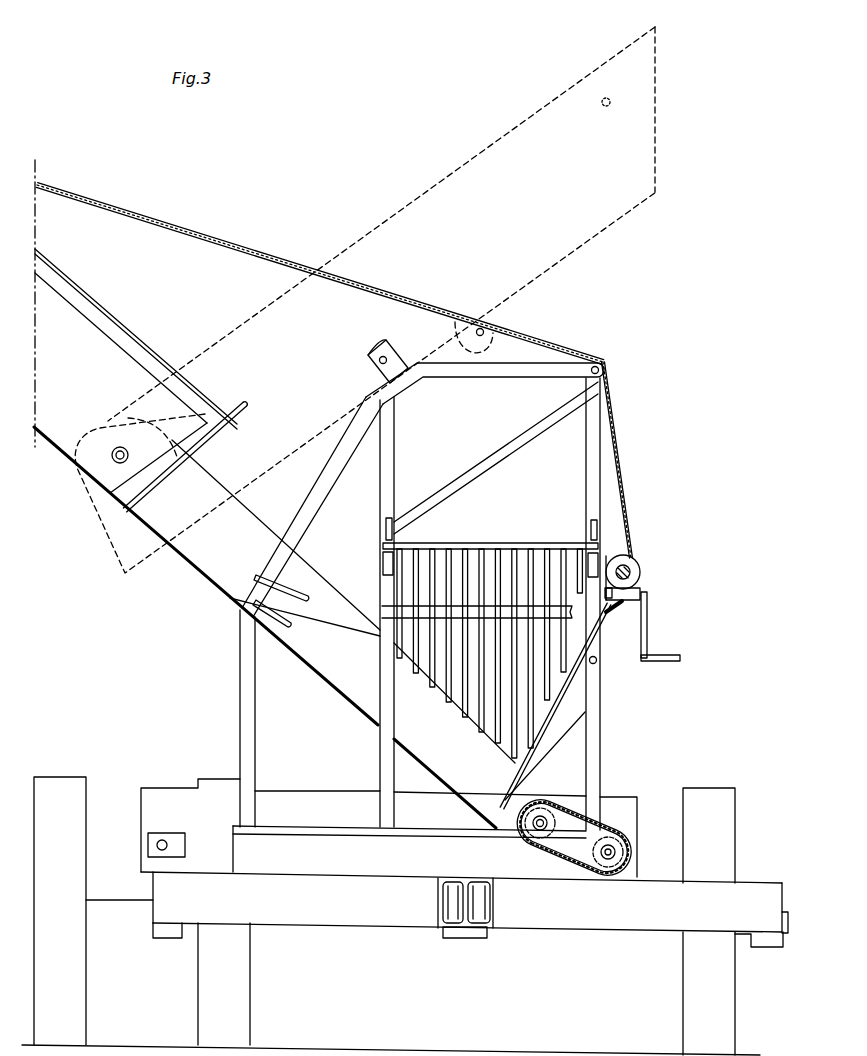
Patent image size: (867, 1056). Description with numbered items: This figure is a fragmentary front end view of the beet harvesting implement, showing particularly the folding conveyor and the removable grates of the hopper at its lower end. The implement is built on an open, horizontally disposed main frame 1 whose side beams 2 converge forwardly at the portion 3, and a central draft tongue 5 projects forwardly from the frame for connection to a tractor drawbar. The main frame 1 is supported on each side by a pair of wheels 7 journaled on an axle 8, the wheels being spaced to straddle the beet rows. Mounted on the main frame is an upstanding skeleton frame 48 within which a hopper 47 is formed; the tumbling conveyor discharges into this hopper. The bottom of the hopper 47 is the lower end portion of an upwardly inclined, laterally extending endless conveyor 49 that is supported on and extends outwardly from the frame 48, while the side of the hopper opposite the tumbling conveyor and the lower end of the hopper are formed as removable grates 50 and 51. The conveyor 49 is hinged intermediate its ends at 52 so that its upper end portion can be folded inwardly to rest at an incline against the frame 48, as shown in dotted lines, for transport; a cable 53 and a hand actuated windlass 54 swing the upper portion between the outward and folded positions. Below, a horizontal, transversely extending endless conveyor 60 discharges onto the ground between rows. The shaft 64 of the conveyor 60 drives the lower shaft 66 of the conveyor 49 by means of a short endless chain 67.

The main frame 1 is at (463, 905).
The side beams 2 is at (162, 893).
The forwardly converging portion 3 is at (597, 914).
The draft tongue 5 is at (331, 921).
The wheels 7 is at (218, 992).
The axle 8 is at (119, 921).
The hopper 47 is at (490, 592).
The upstanding skeleton frame 48 is at (397, 429).
The endless conveyor 49 is at (73, 433).
The removable grate 50 is at (530, 575).
The removable grate 51 is at (568, 693).
The hinge 52 is at (119, 447).
The cable 53 is at (617, 432).
The hand actuated windlass 54 is at (643, 588).
The endless conveyor 60 is at (288, 812).
The shaft 64 is at (612, 851).
The lower shaft 66 is at (537, 826).
The endless chain 67 is at (590, 817).